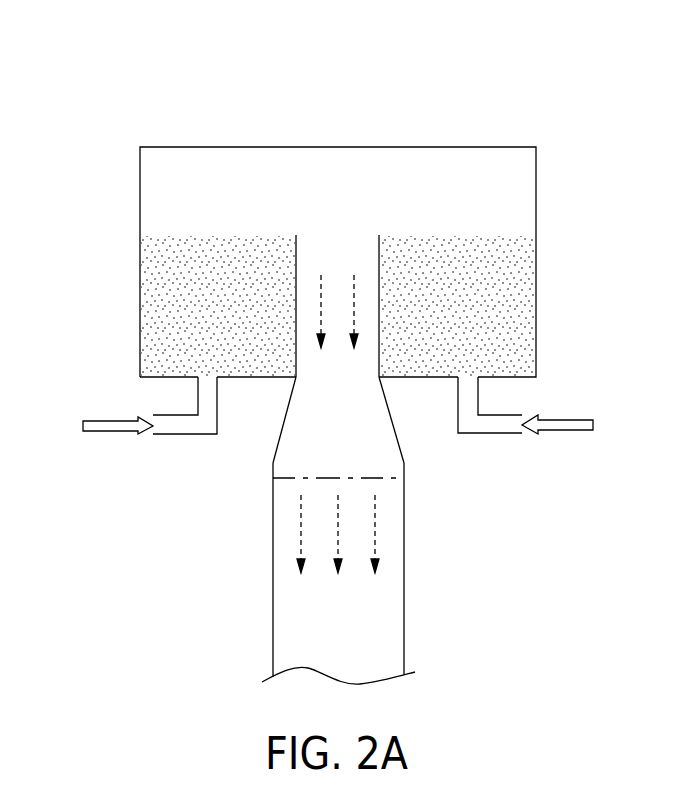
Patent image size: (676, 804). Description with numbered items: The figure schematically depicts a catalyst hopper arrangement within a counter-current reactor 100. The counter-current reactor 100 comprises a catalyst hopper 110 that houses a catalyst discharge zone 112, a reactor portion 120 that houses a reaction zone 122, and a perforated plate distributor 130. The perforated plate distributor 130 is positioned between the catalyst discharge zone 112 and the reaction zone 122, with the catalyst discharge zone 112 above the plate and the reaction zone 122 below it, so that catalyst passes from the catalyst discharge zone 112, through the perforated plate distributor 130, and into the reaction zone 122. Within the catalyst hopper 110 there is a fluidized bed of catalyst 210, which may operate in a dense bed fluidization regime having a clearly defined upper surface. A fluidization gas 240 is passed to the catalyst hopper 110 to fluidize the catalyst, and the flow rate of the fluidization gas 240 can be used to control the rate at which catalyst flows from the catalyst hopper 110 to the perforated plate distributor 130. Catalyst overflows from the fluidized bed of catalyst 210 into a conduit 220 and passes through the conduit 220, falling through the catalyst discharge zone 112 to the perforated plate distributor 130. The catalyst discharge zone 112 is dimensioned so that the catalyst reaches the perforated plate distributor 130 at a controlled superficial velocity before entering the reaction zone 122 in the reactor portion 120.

The counter-current reactor 100 is at (590, 140).
The catalyst hopper 110 is at (536, 223).
The catalyst discharge zone 112 is at (352, 445).
The reactor portion 120 is at (404, 530).
The reaction zone 122 is at (358, 629).
The perforated plate distributor 130 is at (404, 478).
The fluidized bed of catalyst 210 is at (235, 324).
The conduit 220 is at (297, 245).
The fluidization gas 240 is at (112, 420).